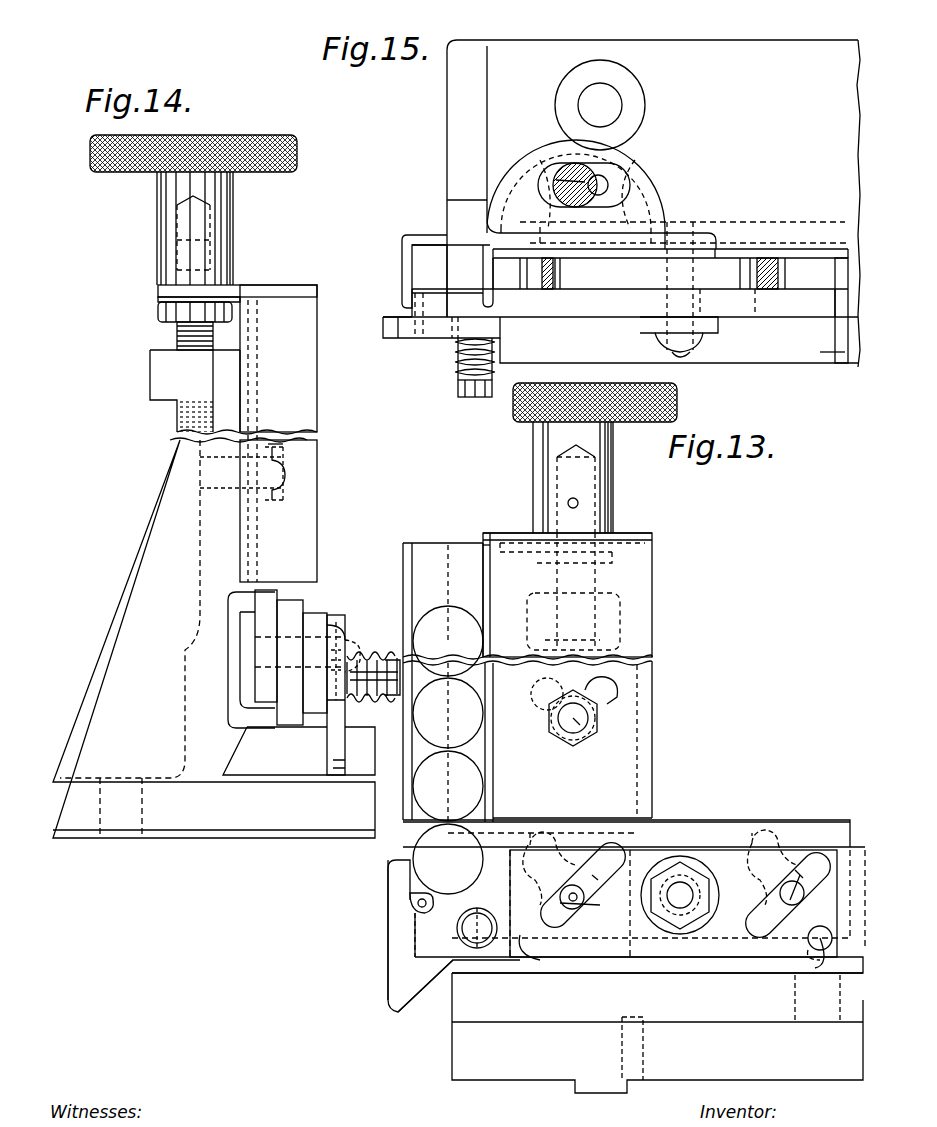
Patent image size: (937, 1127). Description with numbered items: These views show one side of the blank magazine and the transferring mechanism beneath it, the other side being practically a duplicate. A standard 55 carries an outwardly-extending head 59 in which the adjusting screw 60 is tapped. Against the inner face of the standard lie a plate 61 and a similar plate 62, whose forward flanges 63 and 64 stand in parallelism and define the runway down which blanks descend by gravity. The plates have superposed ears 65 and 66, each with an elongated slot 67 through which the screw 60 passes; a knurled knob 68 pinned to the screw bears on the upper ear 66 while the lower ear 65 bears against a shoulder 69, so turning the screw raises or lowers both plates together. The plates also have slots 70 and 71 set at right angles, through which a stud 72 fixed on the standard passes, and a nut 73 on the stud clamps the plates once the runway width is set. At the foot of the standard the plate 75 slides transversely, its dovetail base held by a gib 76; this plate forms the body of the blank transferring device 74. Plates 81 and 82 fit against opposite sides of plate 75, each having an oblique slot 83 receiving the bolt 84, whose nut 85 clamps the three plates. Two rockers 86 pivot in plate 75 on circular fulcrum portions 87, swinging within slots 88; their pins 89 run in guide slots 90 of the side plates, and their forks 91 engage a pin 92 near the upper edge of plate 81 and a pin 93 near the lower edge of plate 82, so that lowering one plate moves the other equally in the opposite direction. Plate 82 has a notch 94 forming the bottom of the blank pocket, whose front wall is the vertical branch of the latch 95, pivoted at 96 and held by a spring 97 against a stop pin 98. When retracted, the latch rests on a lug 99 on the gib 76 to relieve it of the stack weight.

In FIG. 14, the standard 55 is at (137, 615).
In FIG. 15, the standard 55 is at (468, 80).
In FIG. 14, the head 59 is at (157, 386).
In FIG. 15, the head 59 is at (565, 160).
In FIG. 13, the head 59 is at (610, 612).
In FIG. 14, the adjusting screw 60 is at (177, 336).
In FIG. 15, the adjusting screw 60 is at (572, 180).
In FIG. 13, the adjusting screw 60 is at (600, 645).
In FIG. 15, the plate 61 is at (428, 238).
In FIG. 13, the plate 61 is at (445, 555).
In FIG. 15, the plate 62 is at (598, 262).
In FIG. 13, the plate 62 is at (630, 570).
In FIG. 14, the flange 63 is at (403, 575).
In FIG. 15, the flange 63 is at (403, 272).
In FIG. 13, the flange 63 is at (403, 575).
In FIG. 15, the flange 64 is at (487, 280).
In FIG. 13, the flange 64 is at (490, 572).
In FIG. 14, the ear 65 is at (165, 300).
In FIG. 15, the ear 65 is at (470, 200).
In FIG. 13, the ear 65 is at (640, 545).
In FIG. 14, the ear 66 is at (167, 292).
In FIG. 15, the ear 66 is at (654, 207).
In FIG. 13, the ear 66 is at (622, 535).
In FIG. 15, the elongated slot 67 is at (612, 182).
In FIG. 14, the knurled knob 68 is at (187, 187).
In FIG. 13, the knurled knob 68 is at (568, 468).
In FIG. 14, the shoulder 69 is at (168, 316).
In FIG. 13, the shoulder 69 is at (605, 560).
In FIG. 13, the slot 70 is at (538, 705).
In FIG. 13, the slot 71 is at (612, 690).
In FIG. 14, the stud 72 is at (285, 470).
In FIG. 13, the stud 72 is at (580, 726).
In FIG. 14, the nut 73 is at (273, 448).
In FIG. 13, the nut 73 is at (600, 710).
In FIG. 15, the blank transferring device 74 is at (679, 343).
In FIG. 13, the blank transferring device 74 is at (439, 936).
In FIG. 14, the plate 75 is at (252, 728).
In FIG. 15, the plate 75 is at (842, 280).
In FIG. 14, the gib 76 is at (358, 752).
In FIG. 15, the gib 76 is at (818, 352).
In FIG. 13, the gib 76 is at (473, 1003).
In FIG. 14, the plate 81 is at (262, 605).
In FIG. 15, the plate 81 is at (812, 254).
In FIG. 13, the plate 81 is at (662, 832).
In FIG. 14, the plate 82 is at (314, 612).
In FIG. 15, the plate 82 is at (752, 307).
In FIG. 13, the plate 82 is at (742, 955).
In FIG. 13, the oblique slot 83 is at (700, 855).
In FIG. 14, the bolt 84 is at (360, 652).
In FIG. 15, the bolt 84 is at (686, 360).
In FIG. 13, the bolt 84 is at (672, 896).
In FIG. 14, the nut 85 is at (340, 640).
In FIG. 15, the nut 85 is at (658, 344).
In FIG. 13, the nut 85 is at (700, 935).
In FIG. 15, the rocker 86 is at (556, 286).
In FIG. 13, the rocker 86 is at (580, 905).
In FIG. 13, the fulcrum portion 87 is at (560, 912).
In FIG. 13, the slot 88 is at (578, 910).
In FIG. 13, the pin 89 is at (572, 895).
In FIG. 13, the guide slot 90 is at (597, 876).
In FIG. 13, the fork 91 is at (540, 842).
In FIG. 13, the pin 92 is at (535, 842).
In FIG. 13, the pin 93 is at (625, 958).
In FIG. 13, the notch 94 is at (485, 860).
In FIG. 14, the latch 95 is at (337, 722).
In FIG. 15, the latch 95 is at (404, 340).
In FIG. 13, the latch 95 is at (398, 930).
In FIG. 14, the pivot 96 is at (372, 698).
In FIG. 15, the pivot 96 is at (470, 398).
In FIG. 13, the pivot 96 is at (470, 925).
In FIG. 14, the spring 97 is at (372, 665).
In FIG. 15, the spring 97 is at (460, 375).
In FIG. 13, the spring 97 is at (473, 930).
In FIG. 15, the stop pin 98 is at (410, 324).
In FIG. 13, the stop pin 98 is at (410, 893).
In FIG. 14, the lug 99 is at (338, 772).
In FIG. 13, the lug 99 is at (415, 1012).